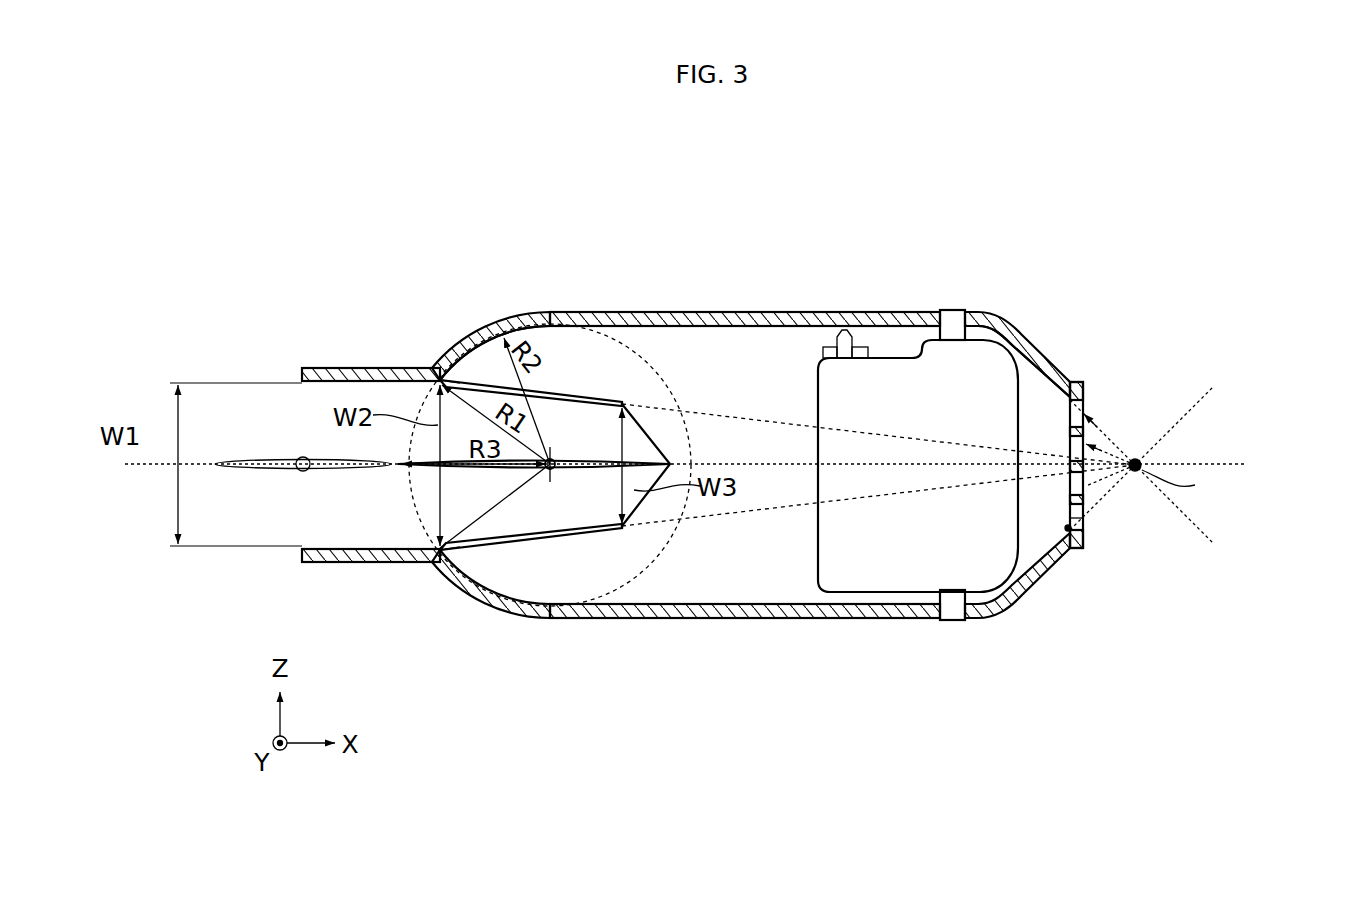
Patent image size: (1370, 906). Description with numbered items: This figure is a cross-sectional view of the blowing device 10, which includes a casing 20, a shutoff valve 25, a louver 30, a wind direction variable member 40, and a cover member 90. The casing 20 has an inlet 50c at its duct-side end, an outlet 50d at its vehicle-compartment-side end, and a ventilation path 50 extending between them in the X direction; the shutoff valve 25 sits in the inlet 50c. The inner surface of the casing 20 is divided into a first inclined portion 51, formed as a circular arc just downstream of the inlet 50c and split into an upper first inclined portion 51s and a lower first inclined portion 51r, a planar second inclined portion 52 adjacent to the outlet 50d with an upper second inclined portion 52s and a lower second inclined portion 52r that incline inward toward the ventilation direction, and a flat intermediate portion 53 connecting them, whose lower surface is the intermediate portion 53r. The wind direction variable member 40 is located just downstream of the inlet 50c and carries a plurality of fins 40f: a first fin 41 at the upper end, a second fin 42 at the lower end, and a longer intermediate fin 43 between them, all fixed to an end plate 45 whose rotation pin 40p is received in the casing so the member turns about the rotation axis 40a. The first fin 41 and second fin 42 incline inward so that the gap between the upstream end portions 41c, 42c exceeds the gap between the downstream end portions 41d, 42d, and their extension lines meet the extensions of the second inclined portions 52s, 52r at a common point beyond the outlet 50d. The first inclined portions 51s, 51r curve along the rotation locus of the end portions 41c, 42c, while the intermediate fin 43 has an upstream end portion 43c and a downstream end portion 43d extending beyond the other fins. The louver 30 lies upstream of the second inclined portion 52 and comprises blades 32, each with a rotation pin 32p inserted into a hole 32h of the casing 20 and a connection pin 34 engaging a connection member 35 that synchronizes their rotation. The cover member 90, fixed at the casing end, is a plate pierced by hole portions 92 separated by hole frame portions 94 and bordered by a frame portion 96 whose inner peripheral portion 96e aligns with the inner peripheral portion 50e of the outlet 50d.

The blowing device 10 is at (1048, 206).
The casing 20 is at (668, 308).
The shutoff valve 25 is at (282, 470).
The louver 30 is at (865, 598).
The blade 32 is at (905, 572).
The hole 32h is at (948, 310).
The rotation pin 32p is at (958, 318).
The connection pin 34 is at (843, 332).
The connection member 35 is at (858, 347).
The wind direction variable member 40 is at (508, 554).
The rotation axis 40a is at (546, 469).
The fins 40f is at (567, 444).
The rotation pin 40p is at (554, 469).
The first fin 41 is at (565, 393).
The end portion of first fin in −X direction 41c is at (440, 380).
The end portion of first fin in +X direction 41d is at (625, 402).
The second fin 42 is at (562, 536).
The end portion of second fin in −X direction 42c is at (440, 550).
The end portion of second fin in +X direction 42d is at (625, 528).
The intermediate fin 43 is at (660, 455).
The end portion of intermediate fin in −X direction 43c is at (398, 467).
The end portion of intermediate fin in +X direction 43d is at (690, 468).
The end plate 45 is at (676, 400).
The ventilation path 50 is at (778, 376).
The inlet 50c is at (382, 442).
The outlet 50d is at (1088, 410).
The inner peripheral portion of outlet 50e is at (1066, 528).
The first inclined portion 51 is at (497, 350).
The first inclined portion in +Z direction 51s is at (495, 353).
The first inclined portion in −Z direction 51r is at (490, 590).
The second inclined portion 52 is at (1030, 372).
The second inclined portion in +Z direction 52s is at (1017, 361).
The second inclined portion in −Z direction 52r is at (1045, 538).
The intermediate portion 53 is at (736, 328).
The intermediate portion in −Z direction 53r is at (732, 612).
The cover member 90 is at (1086, 384).
The hole portion 92 is at (1092, 443).
The hole frame portion 94 is at (1080, 503).
The frame portion 96 is at (1078, 548).
The inner peripheral portion of frame portion 96e is at (1077, 518).